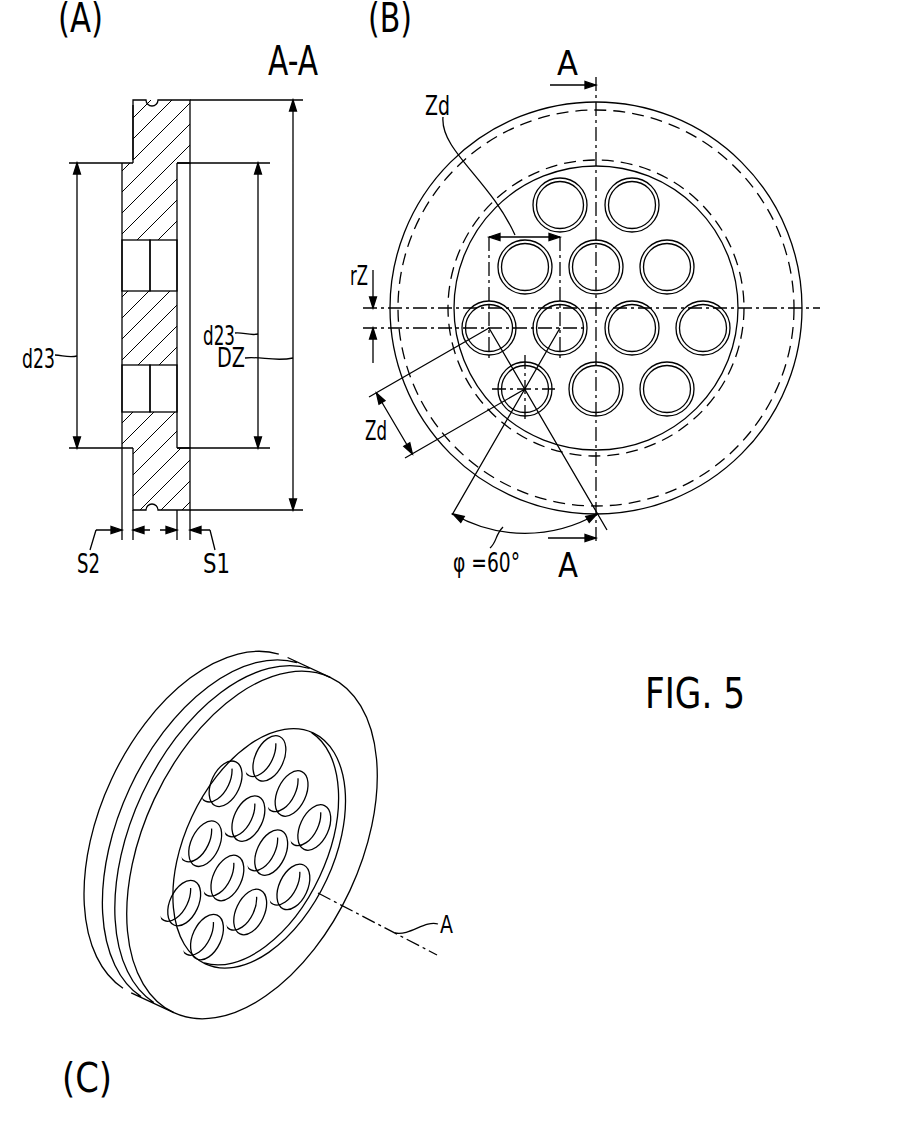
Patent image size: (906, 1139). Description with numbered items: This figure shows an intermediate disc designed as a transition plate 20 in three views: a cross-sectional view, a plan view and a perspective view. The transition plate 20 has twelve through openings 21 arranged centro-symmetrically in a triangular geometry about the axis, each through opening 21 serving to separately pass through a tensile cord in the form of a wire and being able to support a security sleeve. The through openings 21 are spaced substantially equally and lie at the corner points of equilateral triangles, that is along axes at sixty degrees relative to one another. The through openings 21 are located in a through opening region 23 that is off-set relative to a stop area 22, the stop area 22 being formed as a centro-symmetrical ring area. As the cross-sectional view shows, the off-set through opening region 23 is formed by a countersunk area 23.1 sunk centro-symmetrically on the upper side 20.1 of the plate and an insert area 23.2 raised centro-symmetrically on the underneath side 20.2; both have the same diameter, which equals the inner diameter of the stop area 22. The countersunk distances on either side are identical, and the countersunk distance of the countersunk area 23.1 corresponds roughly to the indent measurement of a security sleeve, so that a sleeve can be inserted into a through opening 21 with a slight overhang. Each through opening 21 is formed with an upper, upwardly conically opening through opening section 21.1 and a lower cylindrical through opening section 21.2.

The transition plate 20 is at (207, 70).
The upper side 20.1 is at (191, 134).
The underneath side 20.2 is at (133, 130).
The through opening 21 is at (165, 395).
The upper conically opening through opening section 21.1 is at (165, 275).
The lower cylindrical through opening section 21.2 is at (131, 266).
The stop area 22 is at (352, 743).
The through opening region 23 is at (230, 945).
The countersunk area 23.1 is at (177, 212).
The insert area 23.2 is at (122, 212).